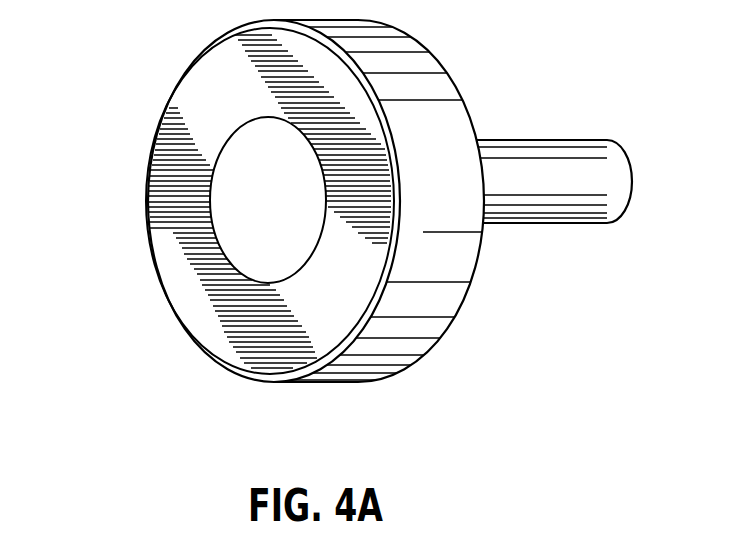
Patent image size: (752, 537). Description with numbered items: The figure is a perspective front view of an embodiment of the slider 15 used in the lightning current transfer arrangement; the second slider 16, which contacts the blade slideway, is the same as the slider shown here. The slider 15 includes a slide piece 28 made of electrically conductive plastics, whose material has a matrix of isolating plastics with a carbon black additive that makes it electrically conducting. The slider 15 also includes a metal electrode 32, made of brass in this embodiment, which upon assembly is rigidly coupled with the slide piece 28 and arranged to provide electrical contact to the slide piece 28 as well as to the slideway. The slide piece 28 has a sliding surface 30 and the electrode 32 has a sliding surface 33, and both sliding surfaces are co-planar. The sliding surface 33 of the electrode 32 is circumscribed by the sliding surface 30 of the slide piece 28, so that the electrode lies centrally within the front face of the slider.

The slider 15 is at (330, 232).
The second slider 16 is at (330, 232).
The slide piece 28 is at (368, 363).
The sliding surface 30 is at (228, 322).
The electrode 32 is at (537, 148).
The sliding surface 33 is at (255, 196).